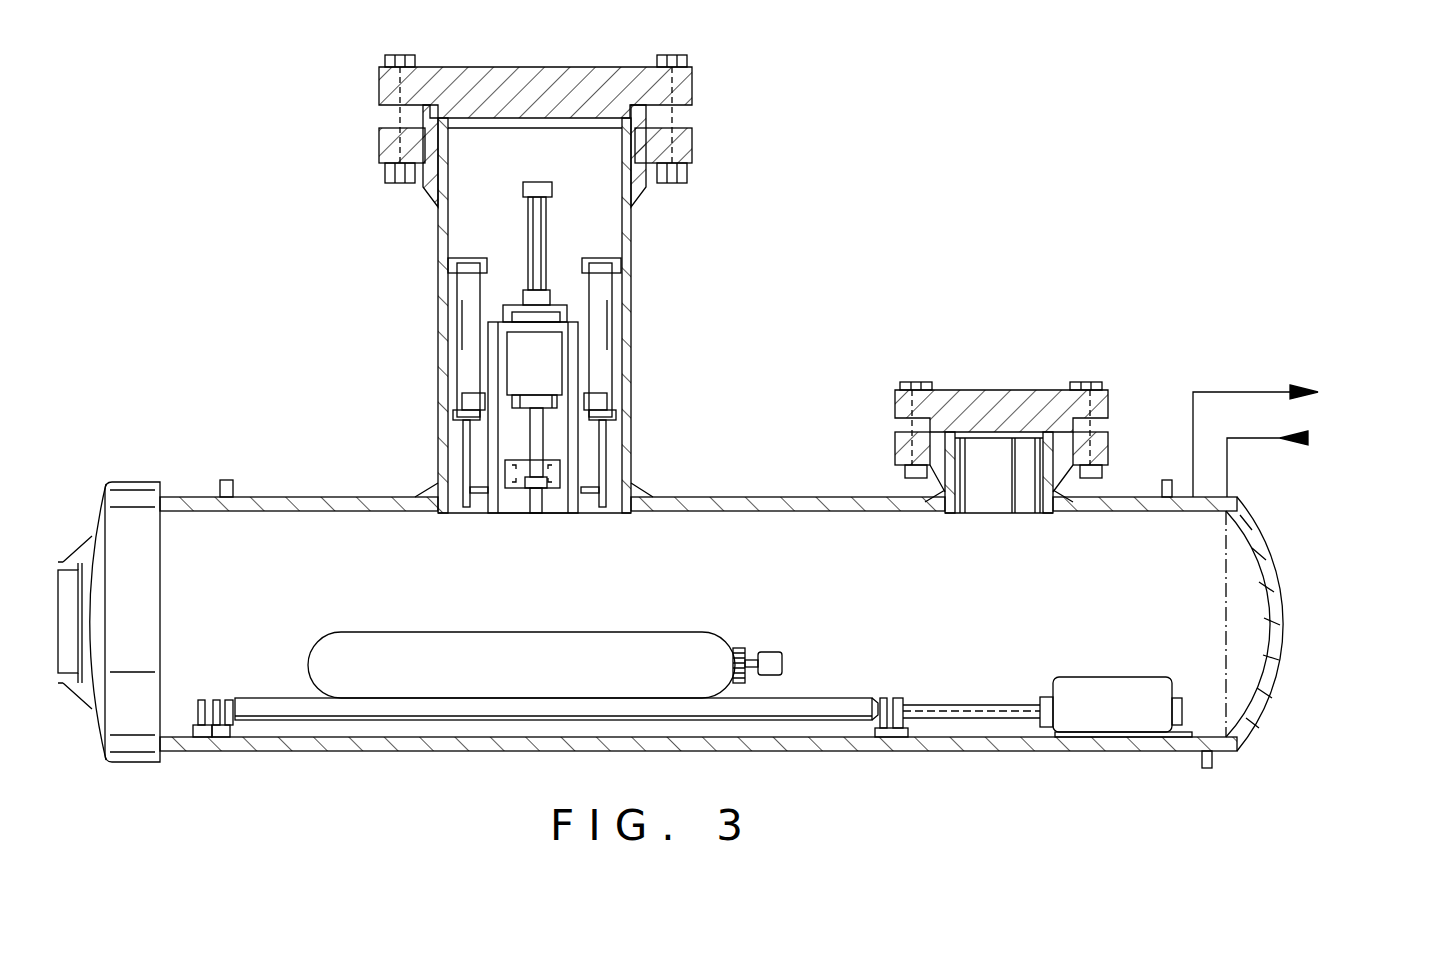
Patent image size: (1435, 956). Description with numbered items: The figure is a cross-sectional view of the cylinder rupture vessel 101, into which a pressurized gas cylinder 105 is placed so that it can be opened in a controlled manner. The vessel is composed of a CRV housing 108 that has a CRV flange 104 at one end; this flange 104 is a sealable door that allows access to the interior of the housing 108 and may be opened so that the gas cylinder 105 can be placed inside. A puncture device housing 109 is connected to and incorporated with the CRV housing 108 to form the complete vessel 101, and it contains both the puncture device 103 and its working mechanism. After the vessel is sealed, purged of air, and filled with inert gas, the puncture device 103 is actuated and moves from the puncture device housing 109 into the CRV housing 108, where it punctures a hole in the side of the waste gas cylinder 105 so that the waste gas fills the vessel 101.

The cylinder rupture vessel 101 is at (713, 305).
The puncture spike 103 is at (536, 514).
The CRV flange 104 is at (125, 715).
The pressurized gas cylinder 105 is at (535, 678).
The CRV housing 108 is at (707, 751).
The puncture device housing 109 is at (437, 358).